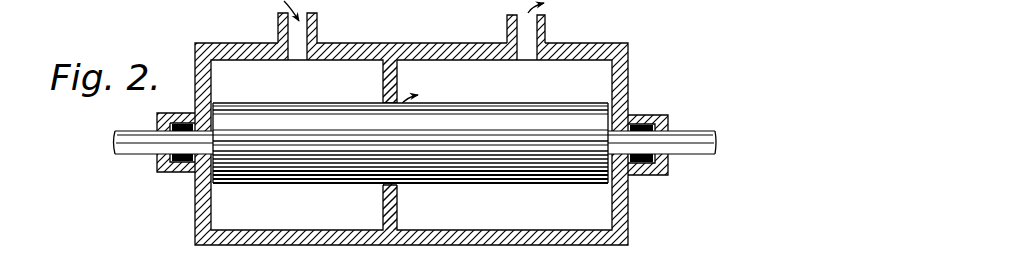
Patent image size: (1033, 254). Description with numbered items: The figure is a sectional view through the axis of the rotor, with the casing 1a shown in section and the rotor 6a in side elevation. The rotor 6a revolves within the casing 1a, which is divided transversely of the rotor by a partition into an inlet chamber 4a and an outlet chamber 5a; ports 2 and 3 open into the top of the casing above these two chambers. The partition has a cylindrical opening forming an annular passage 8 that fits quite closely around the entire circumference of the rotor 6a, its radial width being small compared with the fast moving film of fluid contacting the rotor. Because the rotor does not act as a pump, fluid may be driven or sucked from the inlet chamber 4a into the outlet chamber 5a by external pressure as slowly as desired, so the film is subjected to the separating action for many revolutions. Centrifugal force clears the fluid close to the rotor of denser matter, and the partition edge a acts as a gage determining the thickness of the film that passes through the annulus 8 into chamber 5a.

The casing 1a is at (362, 47).
The inlet port 2 is at (297, 32).
The outlet port 3 is at (527, 34).
The inlet chamber 4a is at (297, 145).
The outlet chamber 5a is at (504, 145).
The rotor 6a is at (410, 143).
The annular passage 8 is at (383, 186).
The partition edge a is at (383, 101).